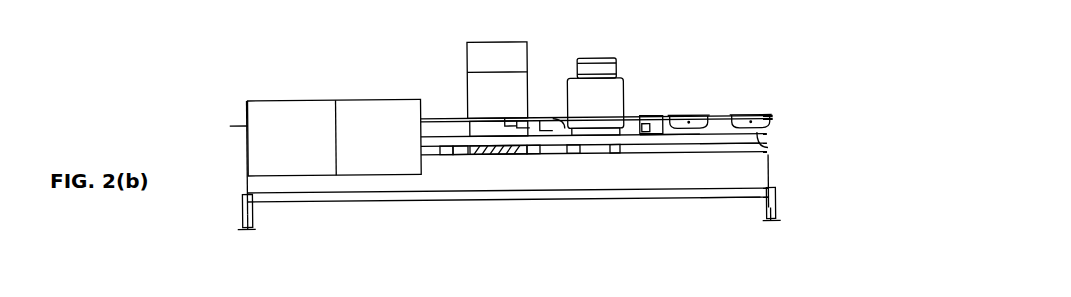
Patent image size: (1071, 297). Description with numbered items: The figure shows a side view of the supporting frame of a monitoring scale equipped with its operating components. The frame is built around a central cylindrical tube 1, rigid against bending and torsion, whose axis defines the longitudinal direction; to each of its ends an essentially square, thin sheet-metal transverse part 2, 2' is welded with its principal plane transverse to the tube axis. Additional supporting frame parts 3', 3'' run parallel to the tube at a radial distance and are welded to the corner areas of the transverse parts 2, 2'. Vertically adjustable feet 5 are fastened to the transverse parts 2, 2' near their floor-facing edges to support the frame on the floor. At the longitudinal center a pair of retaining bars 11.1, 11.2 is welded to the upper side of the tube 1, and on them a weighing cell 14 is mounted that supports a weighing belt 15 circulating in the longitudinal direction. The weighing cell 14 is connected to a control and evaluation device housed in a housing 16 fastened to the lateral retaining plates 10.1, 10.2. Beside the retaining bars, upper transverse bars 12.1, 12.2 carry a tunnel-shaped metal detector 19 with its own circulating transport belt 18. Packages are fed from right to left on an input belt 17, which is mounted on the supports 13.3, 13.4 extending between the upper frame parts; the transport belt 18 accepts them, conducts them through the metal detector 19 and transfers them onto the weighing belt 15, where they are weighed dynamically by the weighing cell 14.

The central cylindrical tube 1 is at (722, 172).
The transverse part 2 is at (246, 162).
The transverse part 2' is at (801, 180).
The upper supporting frame part 3' is at (710, 187).
The supporting frame part 3'' is at (730, 224).
The foot 5 is at (241, 221).
The retaining plate 10.1 is at (453, 150).
The retaining plate 10.2 is at (547, 154).
The retaining bar 11.1 is at (457, 154).
The retaining bar 11.2 is at (520, 155).
The upper transverse bar 12.1 is at (570, 152).
The upper transverse bar 12.2 is at (617, 153).
The support 13.3 is at (690, 138).
The support 13.4 is at (770, 150).
The weighing cell 14 is at (480, 118).
The weighing belt 15 is at (508, 115).
The housing 16 is at (482, 90).
The input belt 17 is at (432, 118).
The transport belt 18 is at (628, 118).
The metal detector 19 is at (610, 98).